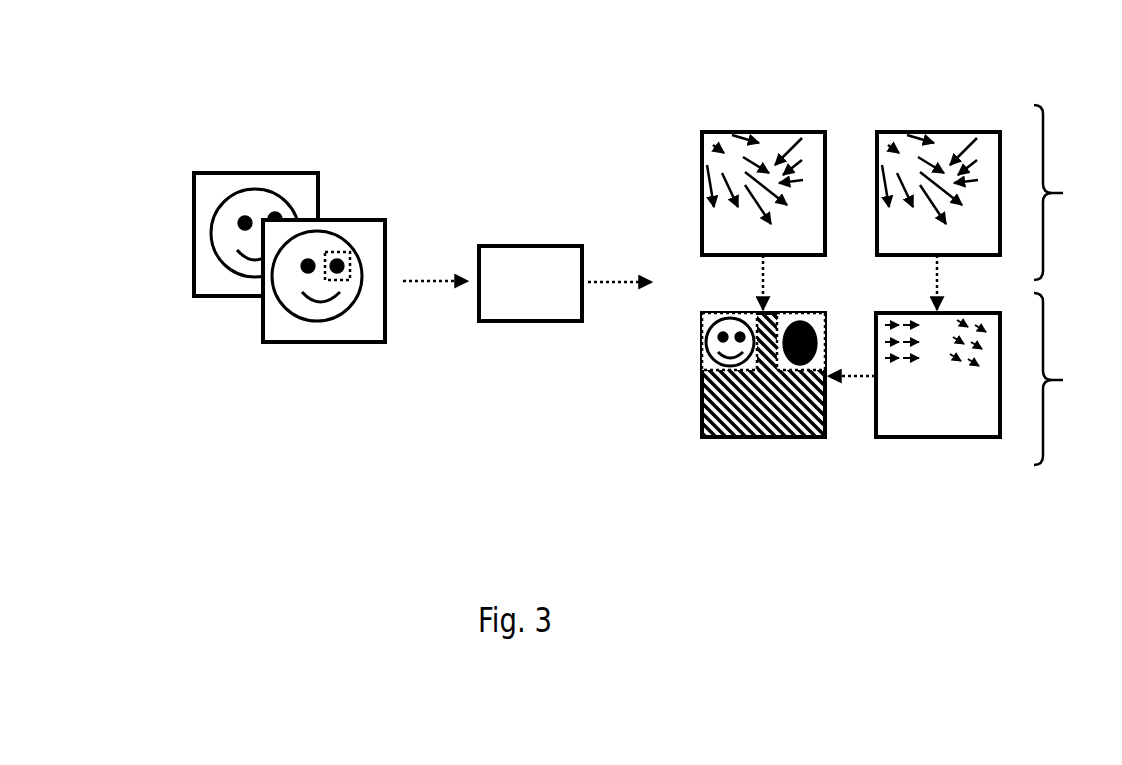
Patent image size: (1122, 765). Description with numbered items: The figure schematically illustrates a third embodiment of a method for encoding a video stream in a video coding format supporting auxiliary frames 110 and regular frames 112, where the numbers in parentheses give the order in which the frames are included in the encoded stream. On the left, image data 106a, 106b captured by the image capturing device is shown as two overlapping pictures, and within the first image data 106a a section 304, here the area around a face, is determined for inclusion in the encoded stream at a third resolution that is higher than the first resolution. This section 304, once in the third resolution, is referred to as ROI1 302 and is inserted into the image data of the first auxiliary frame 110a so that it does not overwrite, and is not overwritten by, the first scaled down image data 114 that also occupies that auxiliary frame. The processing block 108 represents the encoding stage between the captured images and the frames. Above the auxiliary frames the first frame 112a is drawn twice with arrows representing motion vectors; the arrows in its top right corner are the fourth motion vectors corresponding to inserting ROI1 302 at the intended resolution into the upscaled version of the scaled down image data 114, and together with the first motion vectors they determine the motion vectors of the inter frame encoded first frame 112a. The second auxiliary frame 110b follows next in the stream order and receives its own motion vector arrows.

The image data 106b is at (273, 173).
The image data 106a is at (350, 220).
The section of first image data 304 is at (347, 253).
The processing unit 108 is at (530, 283).
The first frame 112a is at (768, 132).
The regular frames 112 is at (1072, 192).
The ROI1 302 is at (825, 320).
The first scaled down image data 114 is at (702, 358).
The first auxiliary frame 110a is at (759, 398).
The second auxiliary frame 110b is at (902, 437).
The auxiliary frames 110 is at (1072, 379).